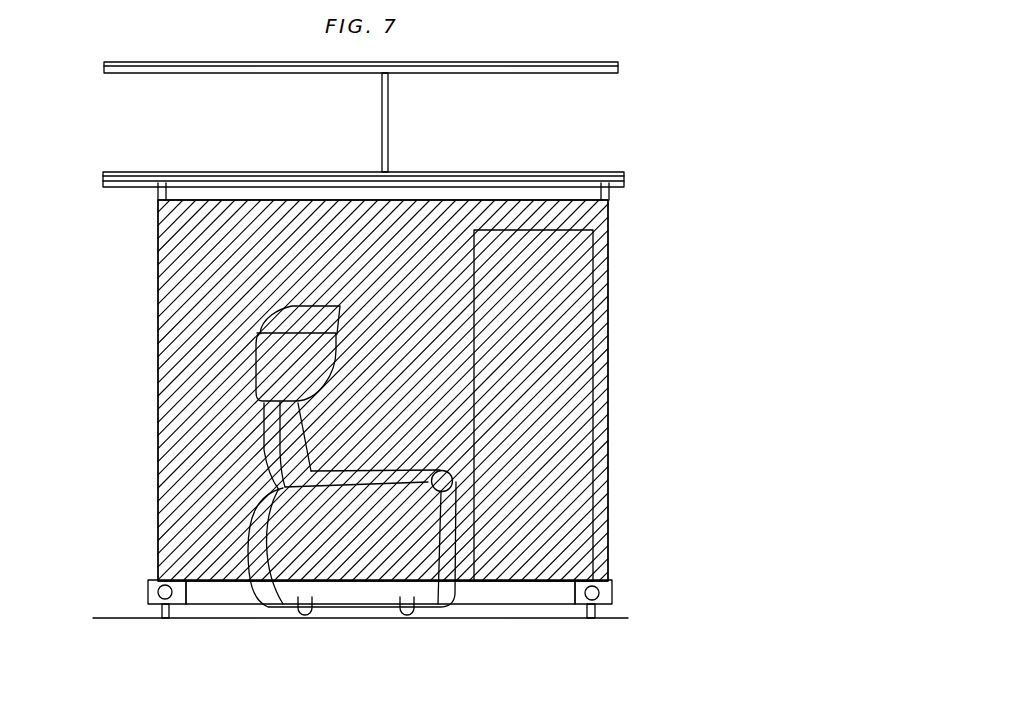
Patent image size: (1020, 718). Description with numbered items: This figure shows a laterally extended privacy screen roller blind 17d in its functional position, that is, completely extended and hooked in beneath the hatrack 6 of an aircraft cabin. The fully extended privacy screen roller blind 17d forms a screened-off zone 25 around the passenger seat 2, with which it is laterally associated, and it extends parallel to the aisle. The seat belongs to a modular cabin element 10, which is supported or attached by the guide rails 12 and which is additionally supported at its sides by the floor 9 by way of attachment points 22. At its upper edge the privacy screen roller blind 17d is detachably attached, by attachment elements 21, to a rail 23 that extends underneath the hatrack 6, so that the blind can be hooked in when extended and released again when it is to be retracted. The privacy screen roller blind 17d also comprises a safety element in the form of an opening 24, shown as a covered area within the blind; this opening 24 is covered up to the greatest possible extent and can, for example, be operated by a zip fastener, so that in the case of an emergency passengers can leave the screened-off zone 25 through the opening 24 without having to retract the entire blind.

The passenger seat 2 is at (418, 532).
The hatrack 6 is at (574, 108).
The floor 9 is at (543, 619).
The modular cabin element 10 is at (148, 582).
The guide rails 12 is at (305, 618).
The privacy screen roller blind 17d is at (173, 367).
The attachment elements 21 is at (160, 196).
The attachment points 22 is at (156, 612).
The rail 23 is at (518, 202).
The opening 24 is at (565, 387).
The screened-off zone 25 is at (138, 268).